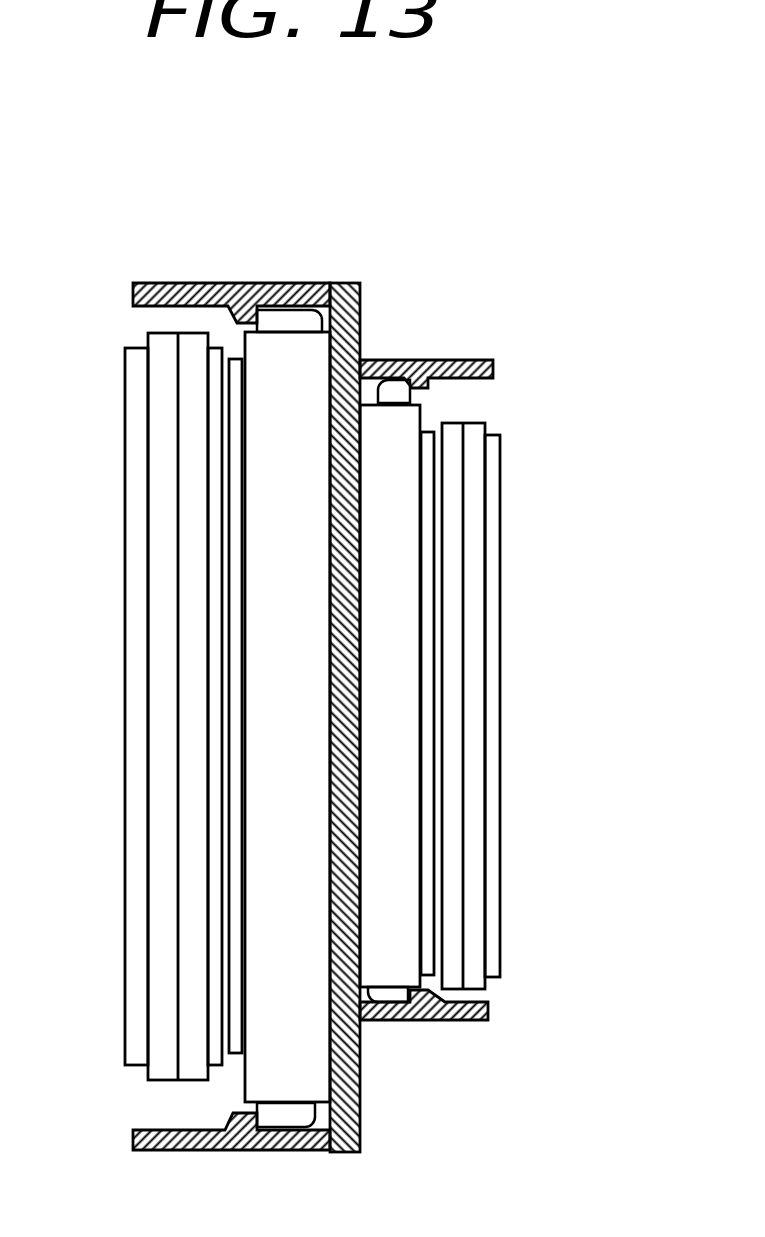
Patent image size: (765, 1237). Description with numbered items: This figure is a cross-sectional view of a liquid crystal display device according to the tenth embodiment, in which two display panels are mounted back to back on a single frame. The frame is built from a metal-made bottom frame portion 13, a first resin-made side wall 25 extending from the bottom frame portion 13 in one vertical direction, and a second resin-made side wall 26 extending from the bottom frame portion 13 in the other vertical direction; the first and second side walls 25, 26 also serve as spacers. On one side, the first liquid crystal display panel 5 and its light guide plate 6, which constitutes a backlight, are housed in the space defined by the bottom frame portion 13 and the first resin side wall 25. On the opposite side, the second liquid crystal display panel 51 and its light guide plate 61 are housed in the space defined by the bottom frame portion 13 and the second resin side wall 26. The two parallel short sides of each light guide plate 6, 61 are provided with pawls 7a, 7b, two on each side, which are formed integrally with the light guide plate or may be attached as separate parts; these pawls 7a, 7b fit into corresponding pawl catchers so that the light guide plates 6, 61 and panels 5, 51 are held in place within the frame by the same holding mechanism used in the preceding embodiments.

The first liquid crystal display panel 5 is at (120, 560).
The second liquid crystal display panel 51 is at (509, 571).
The light guide plate 6 is at (260, 465).
The light guide plate 61 is at (405, 497).
The pawl 7a is at (255, 1112).
The pawl 7b is at (270, 324).
The bottom frame portion 13 is at (358, 1090).
The first resin-made side wall 25 is at (148, 283).
The second resin-made side wall 26 is at (424, 362).